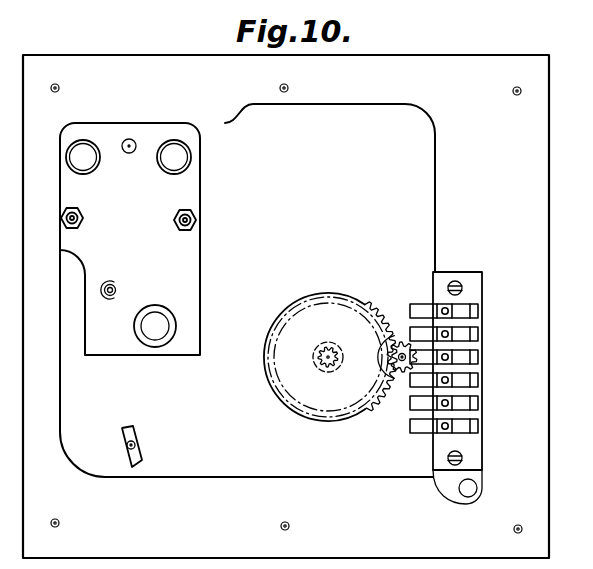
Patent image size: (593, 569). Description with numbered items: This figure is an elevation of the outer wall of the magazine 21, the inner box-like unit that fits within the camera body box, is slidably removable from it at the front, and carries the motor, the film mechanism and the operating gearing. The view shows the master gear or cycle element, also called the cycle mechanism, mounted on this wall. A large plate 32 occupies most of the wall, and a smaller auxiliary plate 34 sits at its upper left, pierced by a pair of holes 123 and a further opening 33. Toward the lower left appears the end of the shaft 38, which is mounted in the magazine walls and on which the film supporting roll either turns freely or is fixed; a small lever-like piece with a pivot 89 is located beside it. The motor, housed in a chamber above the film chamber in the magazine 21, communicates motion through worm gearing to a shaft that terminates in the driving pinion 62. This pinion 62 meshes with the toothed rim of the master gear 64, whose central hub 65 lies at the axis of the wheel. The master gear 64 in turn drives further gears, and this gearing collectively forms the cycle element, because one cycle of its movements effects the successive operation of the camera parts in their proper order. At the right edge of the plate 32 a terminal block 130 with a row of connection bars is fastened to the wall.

The magazine 21 is at (286, 306).
The mounting plate 32 is at (247, 290).
The auxiliary plate 34 is at (130, 239).
The holes 123 is at (174, 155).
The opening 33 is at (157, 324).
The master gear 64 is at (383, 330).
The hub pinion 65 is at (332, 368).
The driving pinion 62 is at (403, 341).
The terminal block 130 is at (474, 361).
The shaft 38 is at (123, 446).
The pivot pin 89 is at (134, 439).